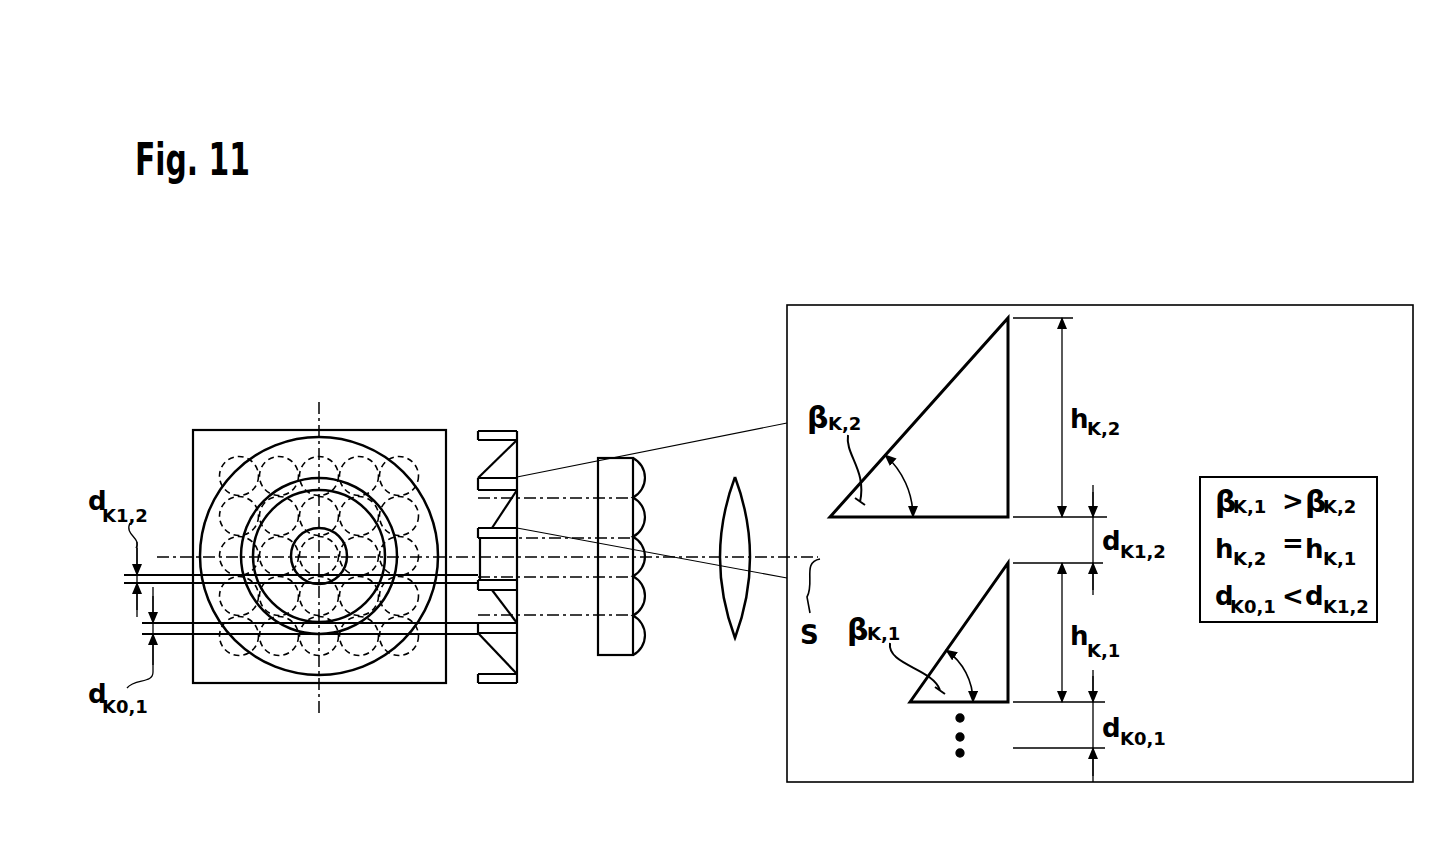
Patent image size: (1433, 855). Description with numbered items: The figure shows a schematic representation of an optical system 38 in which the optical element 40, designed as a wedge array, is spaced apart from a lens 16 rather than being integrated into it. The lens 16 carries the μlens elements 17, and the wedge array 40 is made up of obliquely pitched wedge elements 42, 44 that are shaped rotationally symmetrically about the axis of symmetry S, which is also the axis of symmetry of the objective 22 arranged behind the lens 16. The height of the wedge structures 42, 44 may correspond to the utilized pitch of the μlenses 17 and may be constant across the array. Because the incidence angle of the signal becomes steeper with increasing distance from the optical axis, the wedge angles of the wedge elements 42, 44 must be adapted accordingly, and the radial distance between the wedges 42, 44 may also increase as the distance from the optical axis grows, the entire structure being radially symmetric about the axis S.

The optical system 38 is at (217, 308).
The optical element 40 is at (293, 405).
The wedge element 42 is at (933, 399).
The wedge element 44 is at (959, 633).
The lens 16 is at (613, 466).
The μlens element 17 is at (410, 653).
The objective 22 is at (737, 597).